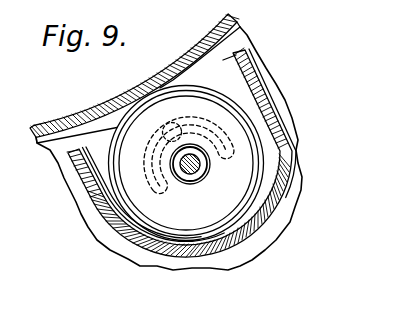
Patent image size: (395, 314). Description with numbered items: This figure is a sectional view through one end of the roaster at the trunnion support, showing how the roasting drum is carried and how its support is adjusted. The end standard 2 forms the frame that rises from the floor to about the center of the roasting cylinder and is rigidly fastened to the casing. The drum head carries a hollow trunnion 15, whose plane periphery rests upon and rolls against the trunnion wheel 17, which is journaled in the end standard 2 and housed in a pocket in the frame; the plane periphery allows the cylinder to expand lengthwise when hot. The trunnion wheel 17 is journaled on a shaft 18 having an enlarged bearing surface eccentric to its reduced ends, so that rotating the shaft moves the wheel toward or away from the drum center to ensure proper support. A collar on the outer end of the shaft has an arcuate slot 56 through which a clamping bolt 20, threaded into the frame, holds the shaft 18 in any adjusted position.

The end standard 2 is at (88, 227).
The trunnion 15 is at (146, 91).
The trunnion wheel 17 is at (262, 167).
The shaft 18 is at (194, 169).
The clamping bolt 20 is at (176, 120).
The arcuate slot 56 is at (229, 151).